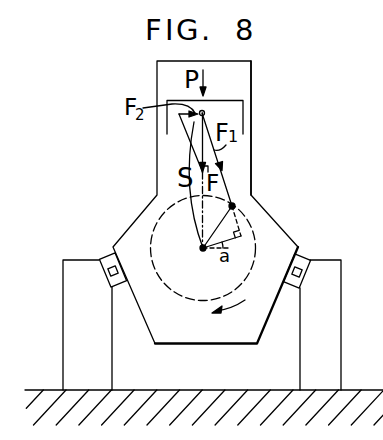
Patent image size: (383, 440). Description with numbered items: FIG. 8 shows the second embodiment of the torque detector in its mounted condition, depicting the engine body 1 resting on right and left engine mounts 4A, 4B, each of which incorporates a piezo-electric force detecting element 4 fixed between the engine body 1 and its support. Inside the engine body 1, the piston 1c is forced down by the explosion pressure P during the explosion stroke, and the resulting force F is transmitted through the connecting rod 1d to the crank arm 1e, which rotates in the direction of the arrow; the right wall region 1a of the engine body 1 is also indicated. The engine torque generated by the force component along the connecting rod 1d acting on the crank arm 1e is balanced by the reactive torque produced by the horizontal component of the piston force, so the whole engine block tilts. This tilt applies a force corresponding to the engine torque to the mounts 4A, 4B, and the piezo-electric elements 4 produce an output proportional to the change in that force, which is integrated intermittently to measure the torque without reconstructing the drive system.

The engine body 1 is at (216, 337).
The side wall of body 1a is at (252, 154).
The piston 1c is at (243, 118).
The connecting rod 1d is at (232, 206).
The crank arm 1e is at (239, 226).
The force detecting element 4 is at (116, 289).
The engine mount 4A is at (107, 258).
The engine mount 4B is at (310, 257).